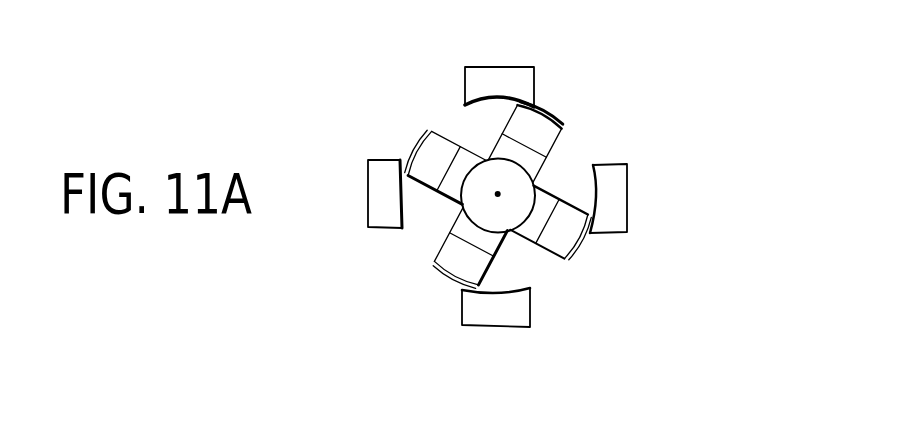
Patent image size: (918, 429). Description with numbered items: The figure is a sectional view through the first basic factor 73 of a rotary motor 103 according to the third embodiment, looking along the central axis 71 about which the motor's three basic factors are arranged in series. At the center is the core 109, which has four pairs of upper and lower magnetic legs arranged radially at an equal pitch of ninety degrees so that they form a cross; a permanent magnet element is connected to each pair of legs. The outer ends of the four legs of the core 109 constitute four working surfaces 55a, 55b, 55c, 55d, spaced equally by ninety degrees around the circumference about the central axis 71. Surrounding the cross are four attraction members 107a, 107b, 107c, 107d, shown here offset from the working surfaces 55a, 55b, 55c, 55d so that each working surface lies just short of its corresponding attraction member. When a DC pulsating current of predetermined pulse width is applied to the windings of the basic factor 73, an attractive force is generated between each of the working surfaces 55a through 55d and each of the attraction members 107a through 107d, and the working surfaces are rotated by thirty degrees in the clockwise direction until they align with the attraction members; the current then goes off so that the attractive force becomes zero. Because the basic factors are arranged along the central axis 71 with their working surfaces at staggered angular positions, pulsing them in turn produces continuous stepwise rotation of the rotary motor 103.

The rotary motor 103 is at (648, 147).
The central axis 71 is at (497, 194).
The working surface 55a is at (563, 127).
The working surface 55b is at (420, 146).
The working surface 55c is at (448, 274).
The working surface 55d is at (580, 243).
The basic factor 73 is at (551, 111).
The core 109 is at (555, 166).
The attraction member 107a is at (627, 191).
The attraction member 107b is at (520, 66).
The attraction member 107c is at (368, 200).
The attraction member 107d is at (505, 327).